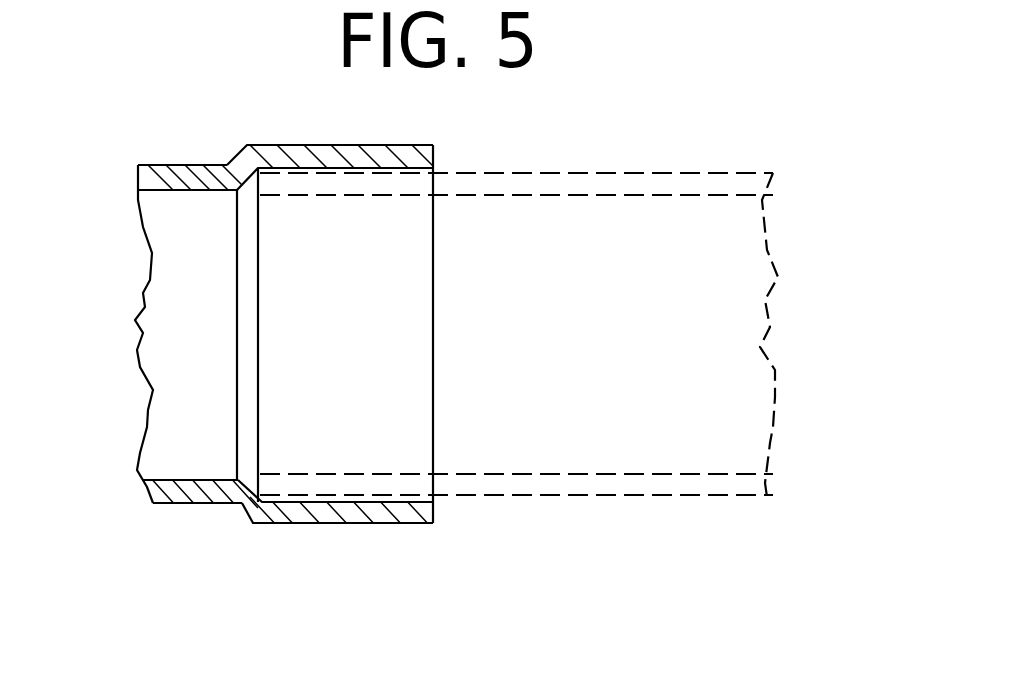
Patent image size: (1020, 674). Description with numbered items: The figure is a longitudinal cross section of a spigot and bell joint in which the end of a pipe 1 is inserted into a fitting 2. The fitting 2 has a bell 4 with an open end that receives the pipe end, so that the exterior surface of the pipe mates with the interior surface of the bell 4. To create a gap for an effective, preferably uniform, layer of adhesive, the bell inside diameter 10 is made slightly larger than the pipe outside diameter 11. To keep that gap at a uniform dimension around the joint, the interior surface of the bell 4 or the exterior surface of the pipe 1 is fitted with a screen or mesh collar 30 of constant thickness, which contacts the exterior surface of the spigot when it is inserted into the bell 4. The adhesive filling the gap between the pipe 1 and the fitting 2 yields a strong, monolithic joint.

The pipe 1 is at (648, 151).
The fitting 2 is at (194, 149).
The bell 4 is at (312, 525).
The bell inside diameter 10 is at (352, 175).
The pipe outside diameter 11 is at (542, 176).
The mesh collar 30 is at (435, 507).